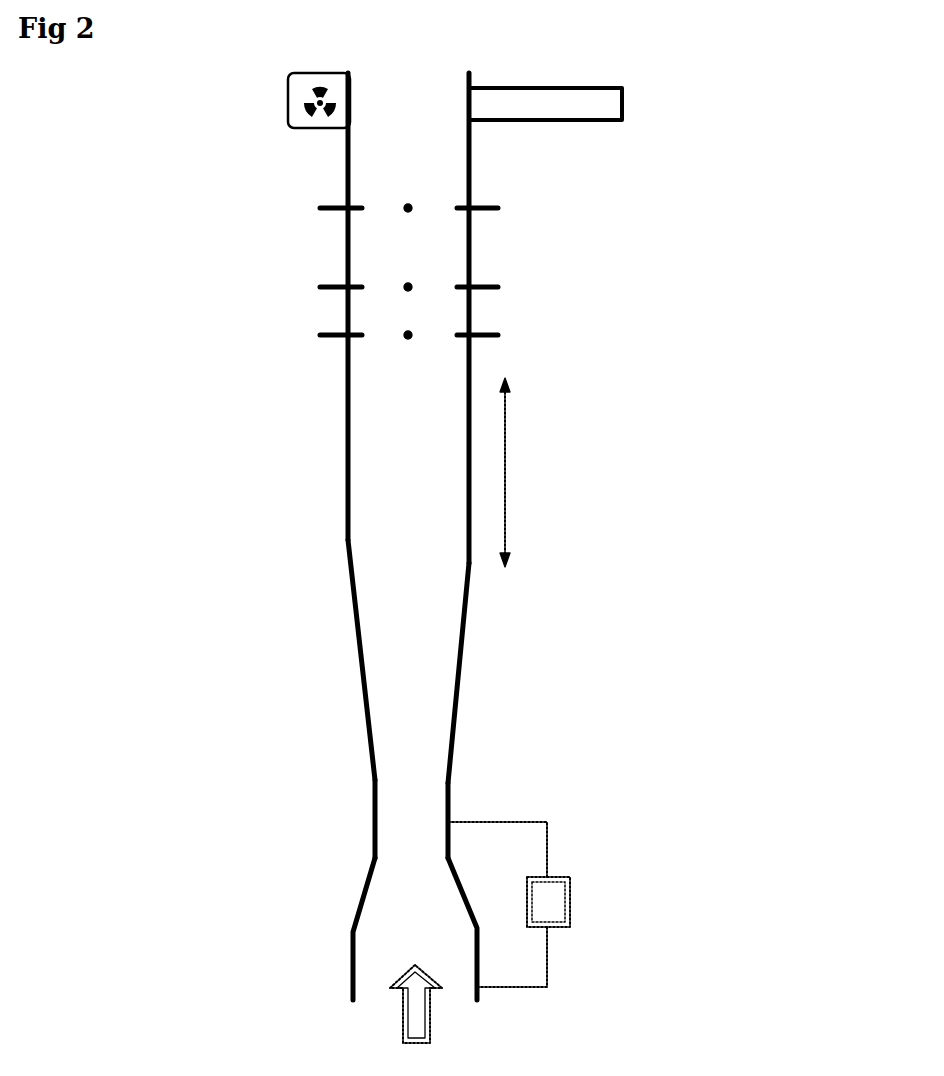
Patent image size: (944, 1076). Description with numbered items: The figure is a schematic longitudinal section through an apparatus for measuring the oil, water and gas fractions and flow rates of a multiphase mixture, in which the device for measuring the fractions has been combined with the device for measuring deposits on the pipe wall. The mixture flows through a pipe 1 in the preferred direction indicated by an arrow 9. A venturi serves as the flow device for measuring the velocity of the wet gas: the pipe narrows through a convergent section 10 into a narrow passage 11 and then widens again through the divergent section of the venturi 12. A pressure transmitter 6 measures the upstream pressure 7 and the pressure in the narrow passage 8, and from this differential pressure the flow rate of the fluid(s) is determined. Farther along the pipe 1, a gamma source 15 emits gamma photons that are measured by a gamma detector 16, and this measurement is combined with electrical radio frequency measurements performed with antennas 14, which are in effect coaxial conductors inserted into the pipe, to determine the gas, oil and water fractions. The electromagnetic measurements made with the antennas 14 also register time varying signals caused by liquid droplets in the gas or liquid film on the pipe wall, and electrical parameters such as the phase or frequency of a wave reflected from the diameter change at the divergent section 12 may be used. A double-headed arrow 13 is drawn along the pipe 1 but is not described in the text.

The pipe 1 is at (348, 458).
The pressure transmitter 6 is at (543, 903).
The upstream pressure 7 is at (500, 993).
The pressure in the narrow passage 8 is at (468, 822).
The arrow 9 is at (427, 1030).
The convergent section 10 is at (360, 893).
The narrow passage 11 is at (373, 822).
The divergent section of the venturi 12 is at (357, 655).
The measuring path arrow 13 is at (505, 450).
The antennas 14 is at (362, 212).
The gamma source 15 is at (292, 113).
The gamma detector 16 is at (545, 122).